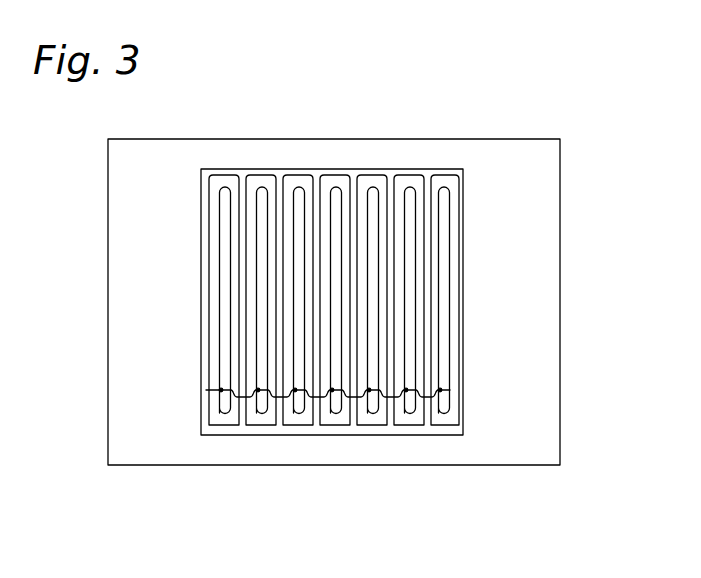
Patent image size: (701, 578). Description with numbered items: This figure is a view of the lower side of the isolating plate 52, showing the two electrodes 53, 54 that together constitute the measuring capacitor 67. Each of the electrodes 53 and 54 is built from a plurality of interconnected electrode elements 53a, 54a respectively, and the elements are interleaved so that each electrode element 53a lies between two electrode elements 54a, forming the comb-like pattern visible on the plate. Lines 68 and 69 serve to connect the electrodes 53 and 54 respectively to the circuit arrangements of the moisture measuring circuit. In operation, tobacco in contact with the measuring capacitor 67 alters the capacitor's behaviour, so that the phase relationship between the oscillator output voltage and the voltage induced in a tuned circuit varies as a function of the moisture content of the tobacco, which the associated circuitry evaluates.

The isolating plate 52 is at (482, 465).
The electrode 53 is at (328, 450).
The electrode element 53a is at (336, 413).
The electrode 54 is at (338, 148).
The electrode element 54a is at (281, 182).
The measuring capacitor 67 is at (152, 295).
The line 68 is at (206, 390).
The line 69 is at (220, 393).